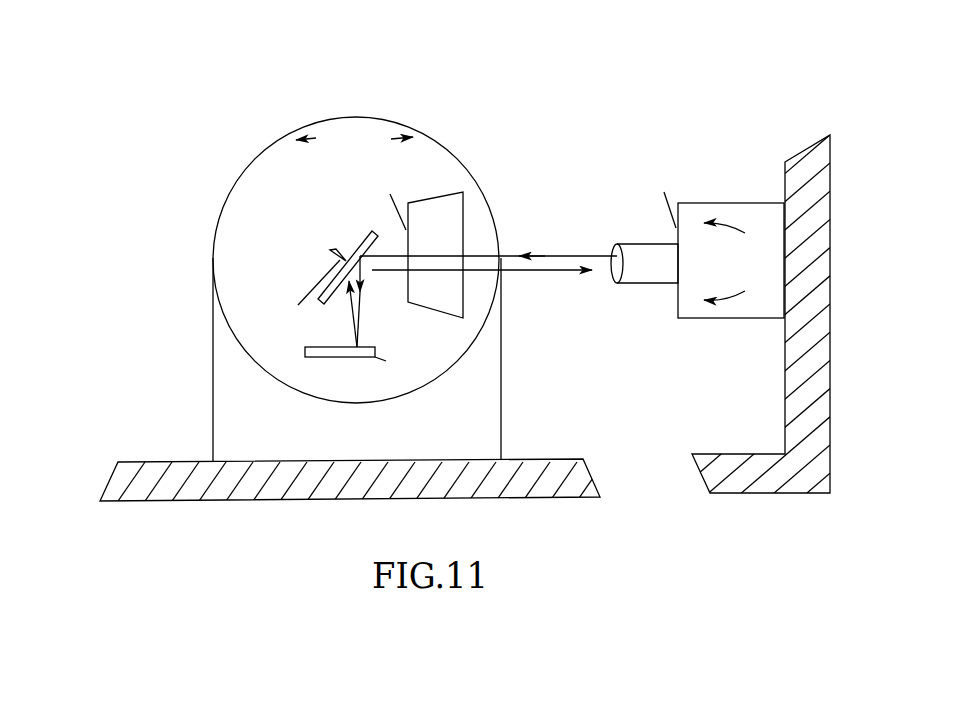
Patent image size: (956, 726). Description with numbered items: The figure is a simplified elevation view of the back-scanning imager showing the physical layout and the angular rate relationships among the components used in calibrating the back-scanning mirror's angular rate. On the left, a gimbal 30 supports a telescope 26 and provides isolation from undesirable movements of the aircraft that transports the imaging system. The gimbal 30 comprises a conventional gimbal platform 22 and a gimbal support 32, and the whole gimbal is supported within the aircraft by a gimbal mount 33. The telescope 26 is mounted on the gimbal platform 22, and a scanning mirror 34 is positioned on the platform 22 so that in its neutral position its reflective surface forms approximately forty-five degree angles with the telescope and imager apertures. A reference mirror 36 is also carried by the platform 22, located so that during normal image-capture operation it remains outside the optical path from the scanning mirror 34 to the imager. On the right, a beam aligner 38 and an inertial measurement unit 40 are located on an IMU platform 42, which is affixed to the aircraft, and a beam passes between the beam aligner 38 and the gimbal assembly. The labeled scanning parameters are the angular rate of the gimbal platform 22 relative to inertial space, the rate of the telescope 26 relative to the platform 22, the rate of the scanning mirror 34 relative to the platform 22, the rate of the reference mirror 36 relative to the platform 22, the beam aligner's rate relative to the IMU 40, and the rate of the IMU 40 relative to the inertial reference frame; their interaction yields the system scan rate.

The gimbal 30 is at (349, 104).
The gimbal platform 22 is at (392, 118).
The telescope 26 is at (433, 195).
The scanning mirror 34 is at (349, 231).
The reference mirror 36 is at (300, 345).
The gimbal support 32 is at (211, 396).
The gimbal mount 33 is at (155, 461).
The beam aligner 38 is at (637, 286).
The inertial measurement unit 40 is at (711, 202).
The IMU platform 42 is at (720, 453).